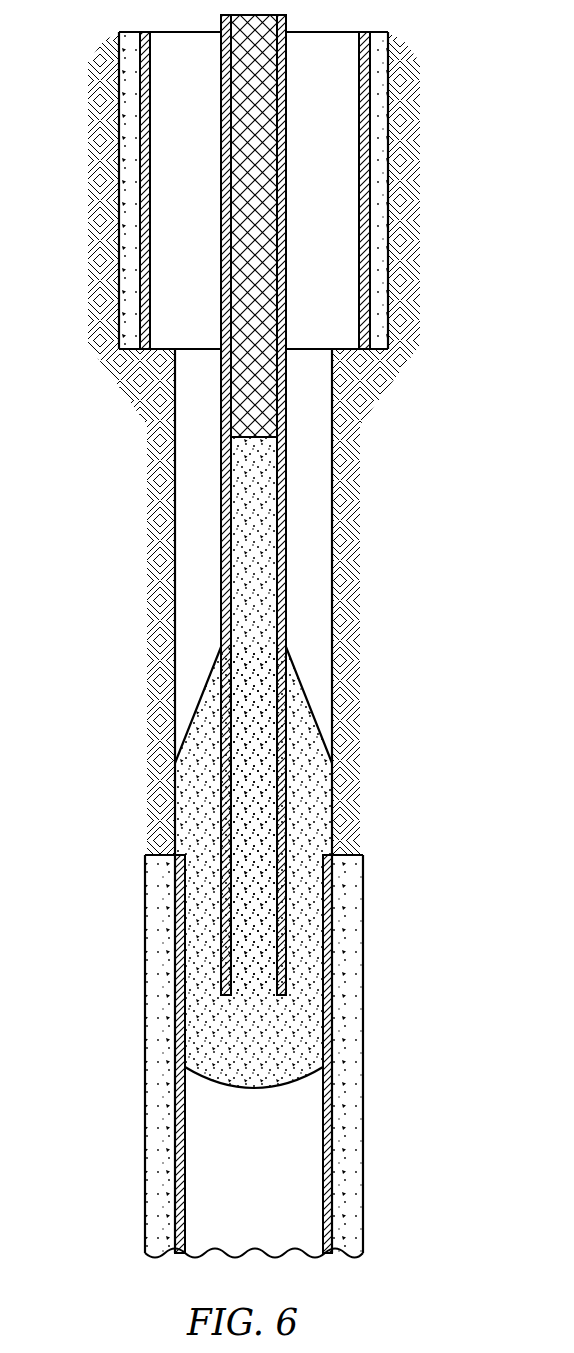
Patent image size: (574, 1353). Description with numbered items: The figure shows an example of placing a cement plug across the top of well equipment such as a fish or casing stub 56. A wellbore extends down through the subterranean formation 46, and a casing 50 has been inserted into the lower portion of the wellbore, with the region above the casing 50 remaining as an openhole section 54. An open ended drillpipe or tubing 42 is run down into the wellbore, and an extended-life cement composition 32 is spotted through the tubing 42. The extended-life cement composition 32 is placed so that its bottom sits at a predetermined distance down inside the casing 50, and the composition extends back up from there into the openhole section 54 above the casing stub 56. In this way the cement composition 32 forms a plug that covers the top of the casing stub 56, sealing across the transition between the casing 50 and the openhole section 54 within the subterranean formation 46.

The extended-life cement composition 32 is at (302, 783).
The tubing 42 is at (288, 473).
The subterranean formation 46 is at (88, 579).
The casing 50 is at (334, 893).
The openhole section 54 is at (164, 778).
The casing stub 56 is at (355, 833).